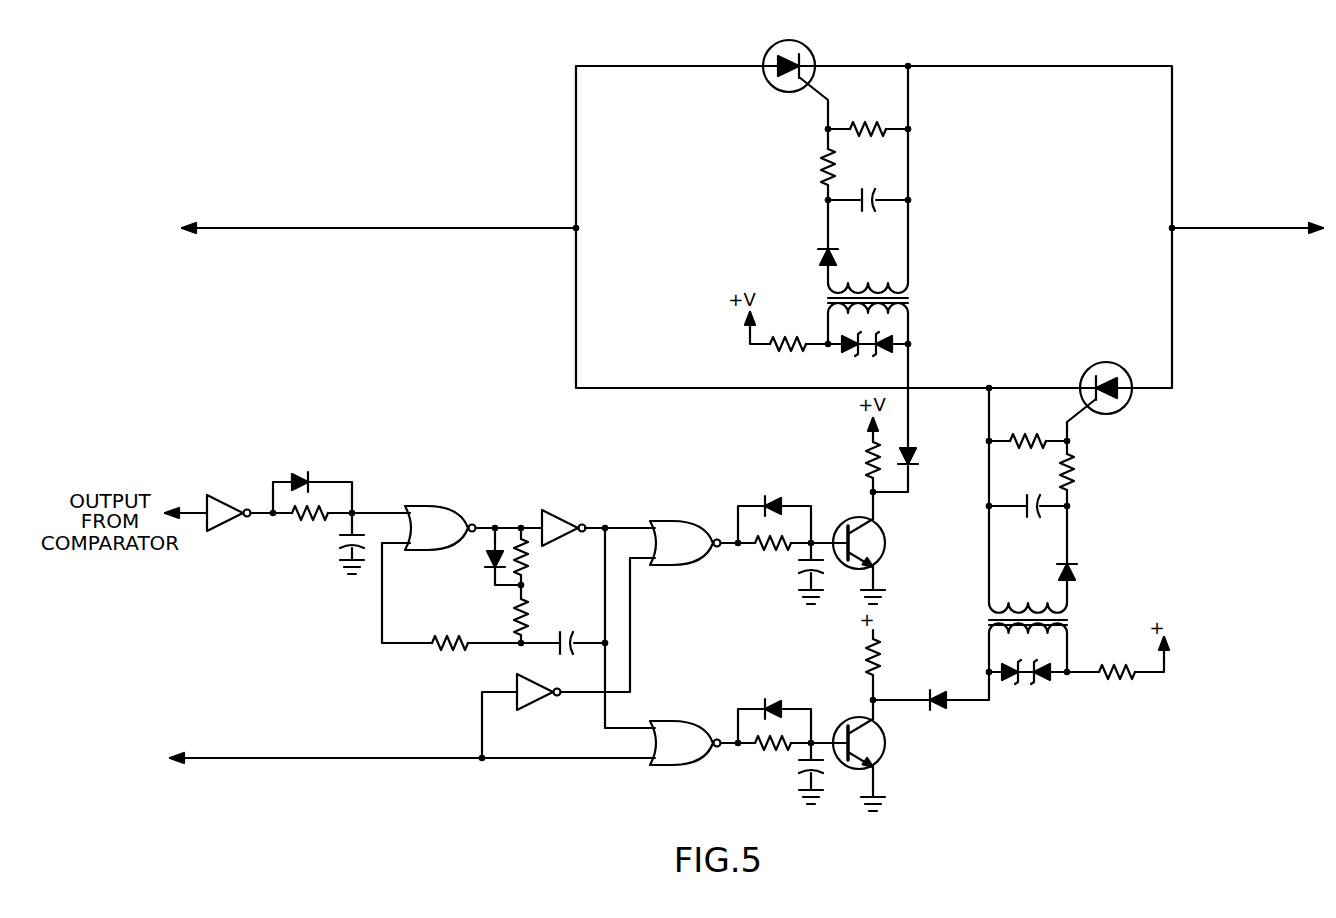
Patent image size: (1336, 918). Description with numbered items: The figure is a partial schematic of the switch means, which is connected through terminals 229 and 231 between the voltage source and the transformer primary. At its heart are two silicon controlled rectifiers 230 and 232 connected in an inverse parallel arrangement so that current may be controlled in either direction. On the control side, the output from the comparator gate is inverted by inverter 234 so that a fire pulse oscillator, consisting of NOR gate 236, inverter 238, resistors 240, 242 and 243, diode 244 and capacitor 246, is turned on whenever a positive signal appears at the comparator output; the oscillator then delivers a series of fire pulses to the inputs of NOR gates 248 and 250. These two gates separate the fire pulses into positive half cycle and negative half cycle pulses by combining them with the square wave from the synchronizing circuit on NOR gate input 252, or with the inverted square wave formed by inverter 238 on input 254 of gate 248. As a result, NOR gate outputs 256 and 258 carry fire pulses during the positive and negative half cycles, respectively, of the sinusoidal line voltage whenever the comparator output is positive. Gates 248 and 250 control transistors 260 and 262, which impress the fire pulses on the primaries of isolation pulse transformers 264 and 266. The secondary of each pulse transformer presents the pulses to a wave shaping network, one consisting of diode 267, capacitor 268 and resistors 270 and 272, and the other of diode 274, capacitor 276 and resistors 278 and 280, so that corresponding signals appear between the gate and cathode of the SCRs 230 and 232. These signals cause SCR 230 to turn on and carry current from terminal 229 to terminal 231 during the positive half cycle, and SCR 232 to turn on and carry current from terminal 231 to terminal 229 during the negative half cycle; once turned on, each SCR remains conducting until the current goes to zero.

The terminal 229 is at (395, 227).
The silicon controlled rectifier 230 is at (808, 50).
The terminal 231 is at (1262, 227).
The silicon controlled rectifier 232 is at (1097, 363).
The inverter 234 is at (225, 495).
The NOR gate 236 is at (445, 505).
The inverter 238 is at (562, 508).
The resistor 240 is at (528, 557).
The resistor 242 is at (517, 604).
The resistor 243 is at (452, 650).
The diode 244 is at (487, 555).
The capacitor 246 is at (578, 630).
The NOR gate 248 is at (660, 518).
The NOR gate 250 is at (683, 718).
The NOR gate input 252 is at (610, 762).
The input 254 is at (634, 560).
The NOR gate output 256 is at (722, 540).
The NOR gate output 258 is at (727, 758).
The transistor 260 is at (886, 538).
The transistor 262 is at (885, 754).
The isolation pulse transformer 264 is at (914, 300).
The isolation pulse transformer 266 is at (1072, 620).
The diode 267 is at (818, 262).
The capacitor 268 is at (870, 211).
The resistor 270 is at (822, 175).
The resistor 272 is at (862, 125).
The diode 274 is at (1080, 570).
The capacitor 276 is at (1046, 495).
The resistor 278 is at (1075, 470).
The resistor 280 is at (1027, 432).